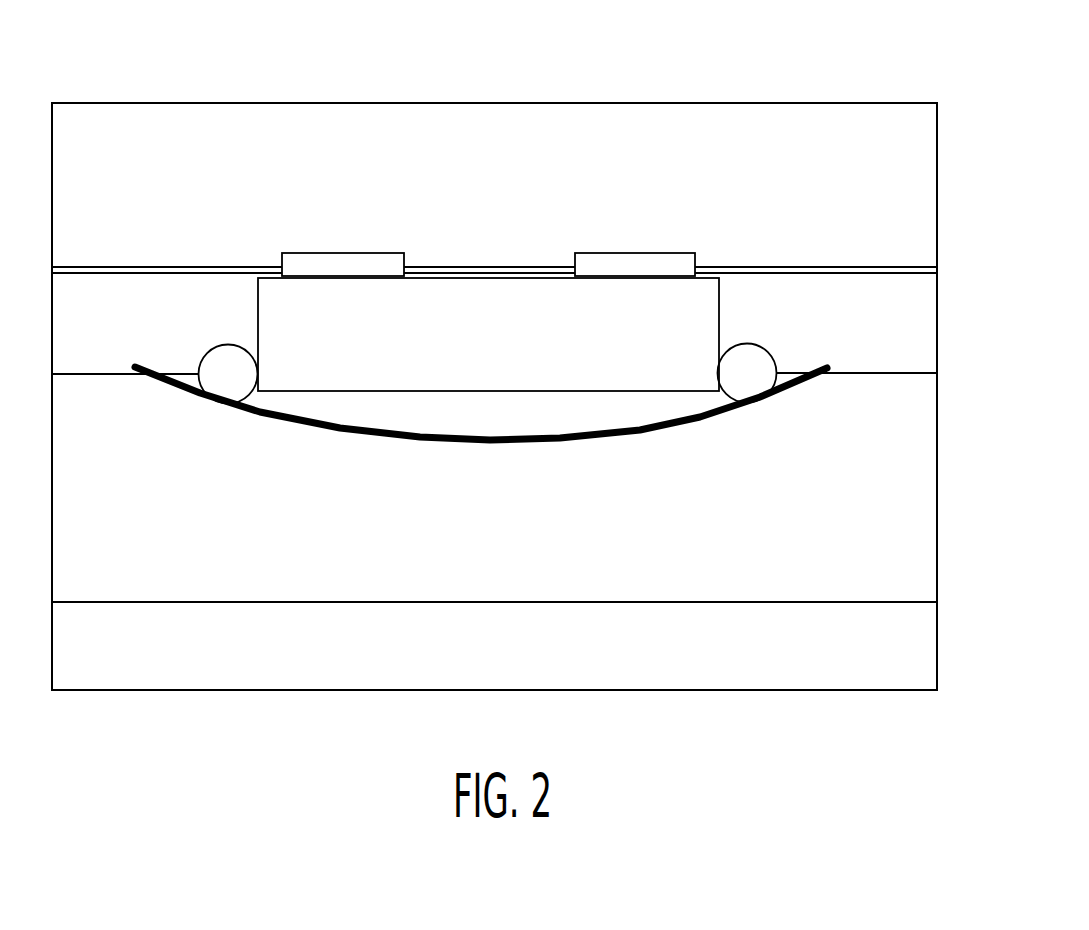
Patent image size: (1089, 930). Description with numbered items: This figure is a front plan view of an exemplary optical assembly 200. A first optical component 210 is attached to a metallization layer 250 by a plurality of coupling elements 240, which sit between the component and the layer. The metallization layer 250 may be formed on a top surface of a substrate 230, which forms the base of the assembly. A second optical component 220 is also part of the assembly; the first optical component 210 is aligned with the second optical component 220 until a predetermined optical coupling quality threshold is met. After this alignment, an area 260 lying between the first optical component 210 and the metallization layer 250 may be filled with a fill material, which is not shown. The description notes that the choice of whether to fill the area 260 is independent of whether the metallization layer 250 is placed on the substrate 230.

The semiconductor package 200 is at (977, 232).
The first optical component 210 is at (488, 313).
The second optical component 220 is at (765, 263).
The substrate 230 is at (937, 468).
The coupling elements 240 is at (228, 363).
The metallization layer 250 is at (343, 428).
The area 260 is at (568, 417).